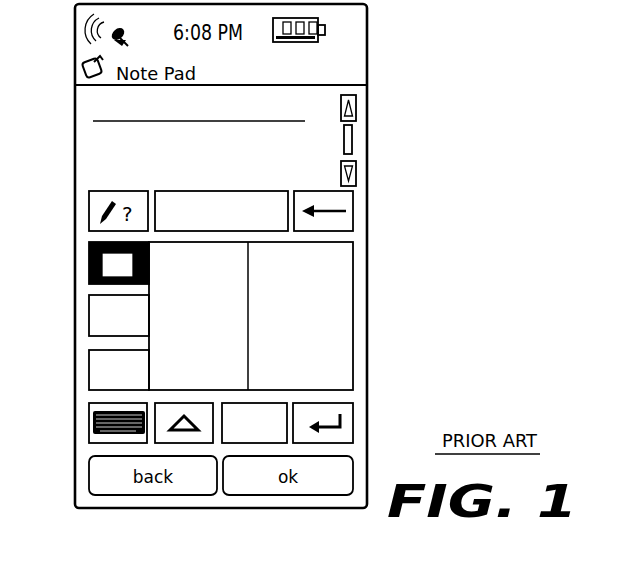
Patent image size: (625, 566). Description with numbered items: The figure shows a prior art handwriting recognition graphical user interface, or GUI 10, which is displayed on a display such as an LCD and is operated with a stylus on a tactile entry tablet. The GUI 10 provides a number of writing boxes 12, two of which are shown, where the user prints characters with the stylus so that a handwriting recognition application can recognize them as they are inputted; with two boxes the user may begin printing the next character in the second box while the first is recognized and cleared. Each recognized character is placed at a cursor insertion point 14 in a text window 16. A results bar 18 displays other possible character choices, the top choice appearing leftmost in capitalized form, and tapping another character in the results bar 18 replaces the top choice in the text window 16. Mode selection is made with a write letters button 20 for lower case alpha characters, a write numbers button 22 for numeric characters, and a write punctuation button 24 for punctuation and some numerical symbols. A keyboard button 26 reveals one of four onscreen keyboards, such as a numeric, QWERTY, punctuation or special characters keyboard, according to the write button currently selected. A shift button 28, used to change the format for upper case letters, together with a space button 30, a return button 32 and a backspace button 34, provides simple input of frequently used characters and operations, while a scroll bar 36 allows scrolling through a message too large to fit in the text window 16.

The graphical user interface 10 is at (460, 390).
The writing boxes 12 is at (231, 312).
The cursor insertion point 14 is at (108, 110).
The text window 16 is at (92, 145).
The results bar 18 is at (165, 192).
The write letters button 20 is at (90, 250).
The write numbers button 22 is at (92, 309).
The write punctuation button 24 is at (95, 357).
The keyboard button 26 is at (92, 439).
The shift button 28 is at (190, 443).
The space button 30 is at (254, 440).
The return button 32 is at (331, 442).
The backspace button 34 is at (341, 224).
The scroll bar 36 is at (352, 141).